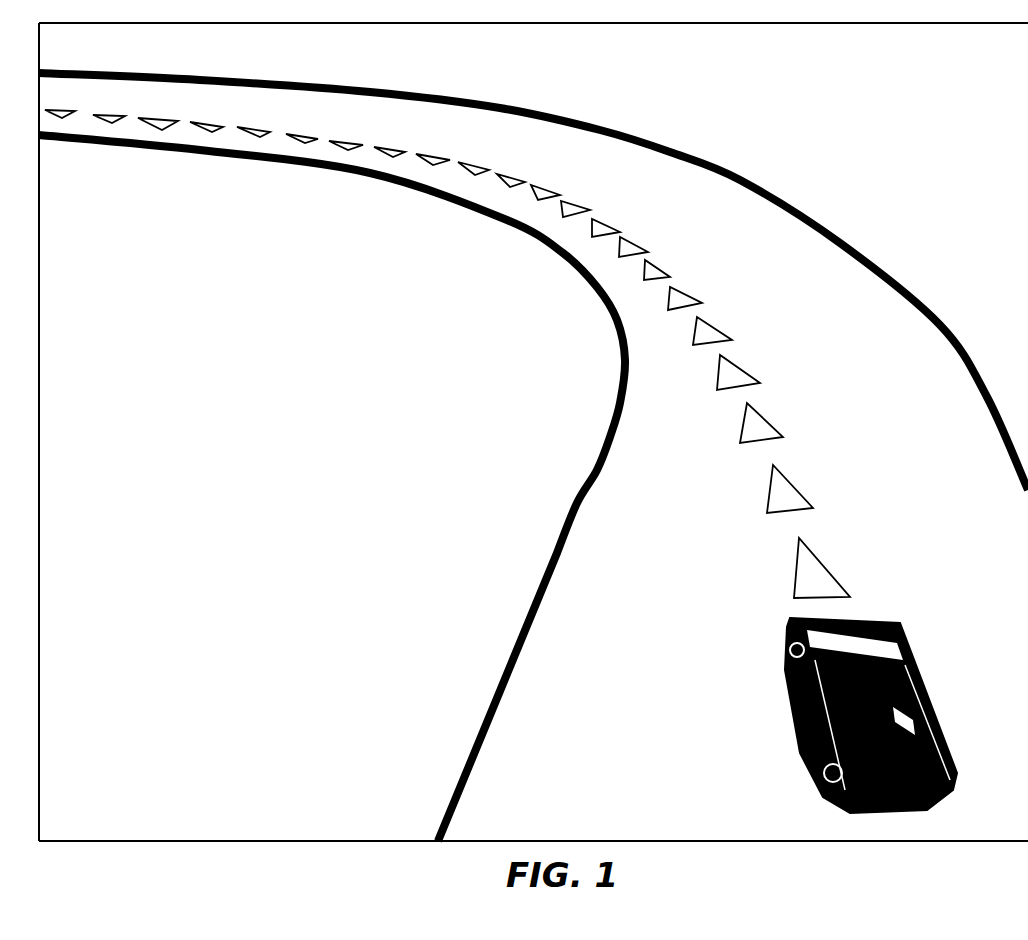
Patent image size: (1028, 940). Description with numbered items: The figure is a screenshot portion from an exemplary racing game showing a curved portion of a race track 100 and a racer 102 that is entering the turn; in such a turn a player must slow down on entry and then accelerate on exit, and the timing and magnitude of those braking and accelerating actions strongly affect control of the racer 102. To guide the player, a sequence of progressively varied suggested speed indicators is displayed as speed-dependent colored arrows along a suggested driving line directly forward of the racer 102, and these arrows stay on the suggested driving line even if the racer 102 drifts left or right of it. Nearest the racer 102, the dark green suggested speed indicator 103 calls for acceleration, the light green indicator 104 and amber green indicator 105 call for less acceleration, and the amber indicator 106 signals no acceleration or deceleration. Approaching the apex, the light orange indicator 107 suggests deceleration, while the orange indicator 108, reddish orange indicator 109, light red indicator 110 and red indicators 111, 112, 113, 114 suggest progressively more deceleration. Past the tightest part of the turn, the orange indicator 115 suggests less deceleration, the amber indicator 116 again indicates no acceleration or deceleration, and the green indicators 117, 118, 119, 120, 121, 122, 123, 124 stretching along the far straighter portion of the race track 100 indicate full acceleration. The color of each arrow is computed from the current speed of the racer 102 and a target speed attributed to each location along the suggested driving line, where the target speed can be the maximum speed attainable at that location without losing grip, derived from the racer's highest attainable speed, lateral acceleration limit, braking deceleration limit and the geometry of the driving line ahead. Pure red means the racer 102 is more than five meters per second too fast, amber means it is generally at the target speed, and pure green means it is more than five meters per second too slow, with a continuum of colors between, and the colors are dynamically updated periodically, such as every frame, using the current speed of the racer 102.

The race track 100 is at (920, 370).
The racer 102 is at (903, 657).
The suggested speed indicator 103 is at (747, 577).
The suggested speed indicator 104 is at (742, 488).
The suggested speed indicator 105 is at (707, 430).
The suggested speed indicator 106 is at (685, 380).
The suggested speed indicator 107 is at (670, 338).
The suggested speed indicator 108 is at (650, 303).
The suggested speed indicator 109 is at (687, 257).
The suggested speed indicator 110 is at (657, 233).
The suggested speed indicator 111 is at (627, 210).
The suggested speed indicator 112 is at (588, 192).
The suggested speed indicator 113 is at (553, 177).
The suggested speed indicator 114 is at (517, 163).
The suggested speed indicator 115 is at (465, 180).
The suggested speed indicator 116 is at (427, 172).
The suggested speed indicator 117 is at (390, 162).
The suggested speed indicator 118 is at (340, 153).
The suggested speed indicator 119 is at (308, 128).
The suggested speed indicator 120 is at (262, 120).
The suggested speed indicator 121 is at (212, 113).
The suggested speed indicator 122 is at (163, 132).
The suggested speed indicator 123 is at (112, 127).
The suggested speed indicator 124 is at (63, 125).